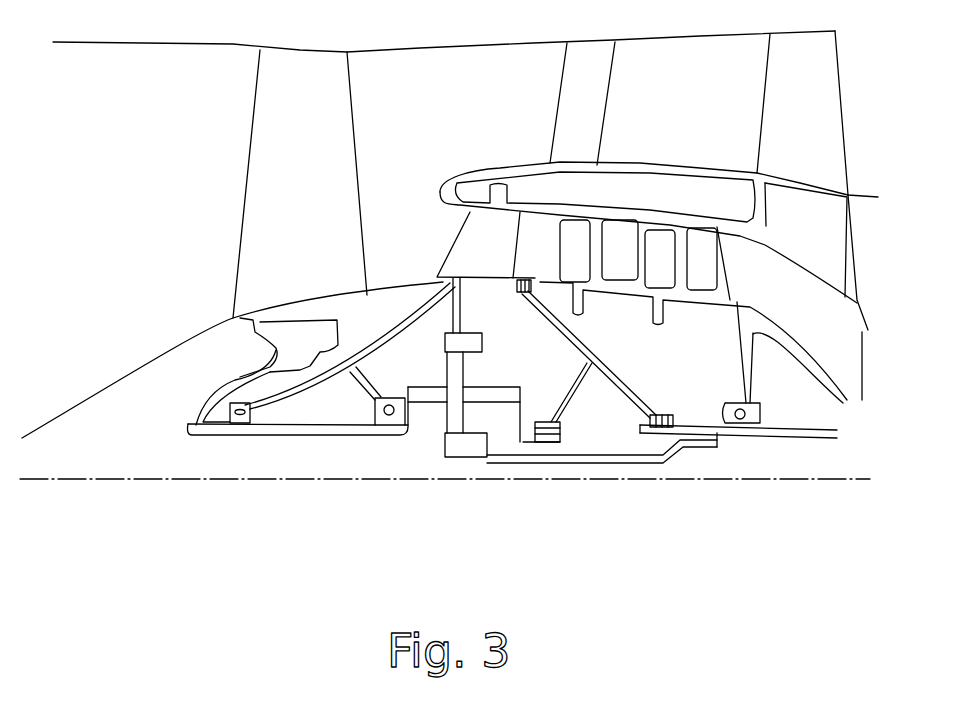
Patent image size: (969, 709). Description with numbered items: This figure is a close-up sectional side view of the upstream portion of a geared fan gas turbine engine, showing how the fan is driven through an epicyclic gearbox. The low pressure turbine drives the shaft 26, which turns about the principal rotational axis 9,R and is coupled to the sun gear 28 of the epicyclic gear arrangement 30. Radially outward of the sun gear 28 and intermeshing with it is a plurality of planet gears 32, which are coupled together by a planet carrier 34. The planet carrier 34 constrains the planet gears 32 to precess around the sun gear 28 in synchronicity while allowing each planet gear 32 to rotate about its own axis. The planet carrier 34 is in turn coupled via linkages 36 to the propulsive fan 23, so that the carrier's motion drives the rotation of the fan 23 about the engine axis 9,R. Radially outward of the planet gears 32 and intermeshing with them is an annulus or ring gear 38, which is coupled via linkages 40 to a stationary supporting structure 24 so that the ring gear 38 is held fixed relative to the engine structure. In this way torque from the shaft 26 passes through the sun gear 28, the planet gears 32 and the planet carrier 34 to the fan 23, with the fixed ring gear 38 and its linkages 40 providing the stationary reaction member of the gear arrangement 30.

The propulsive fan 23 is at (263, 186).
The stationary supporting structure 24 is at (473, 239).
The principal rotational axis / axis of rotation of the fan 9,R is at (222, 480).
The linkages 36 is at (370, 437).
The epicyclic gear arrangement 30 is at (410, 452).
The planet gears 32 is at (447, 412).
The sun gear 28 is at (467, 447).
The planet carrier 34 is at (508, 433).
The shaft 26 is at (622, 463).
The ring gear 38 is at (450, 345).
The linkages 40 is at (462, 318).